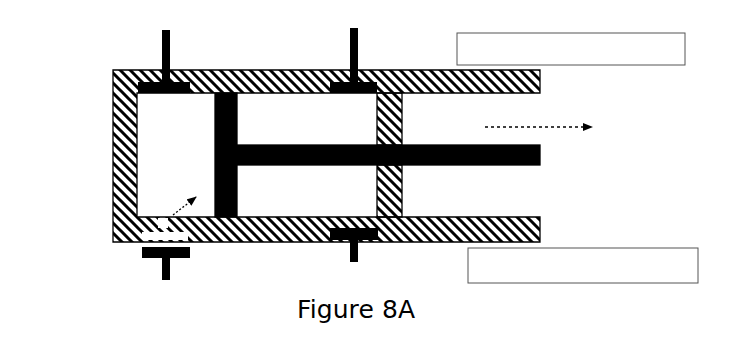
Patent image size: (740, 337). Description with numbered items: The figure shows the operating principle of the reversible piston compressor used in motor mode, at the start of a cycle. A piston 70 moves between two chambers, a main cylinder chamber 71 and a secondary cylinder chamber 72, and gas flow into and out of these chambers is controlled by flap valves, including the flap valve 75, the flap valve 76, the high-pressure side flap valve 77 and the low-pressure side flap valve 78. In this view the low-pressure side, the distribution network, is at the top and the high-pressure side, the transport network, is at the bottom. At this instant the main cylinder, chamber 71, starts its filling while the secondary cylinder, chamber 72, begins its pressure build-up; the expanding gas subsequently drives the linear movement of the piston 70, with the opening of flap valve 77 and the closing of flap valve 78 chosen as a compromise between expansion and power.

The piston 70 is at (515, 165).
The chamber 71 is at (148, 151).
The chamber 72 is at (297, 113).
The flap valve 75 is at (113, 73).
The flap valve 76 is at (152, 247).
The high-pressure side flap valve 77 is at (360, 82).
The low-pressure side flap valve 78 is at (322, 237).